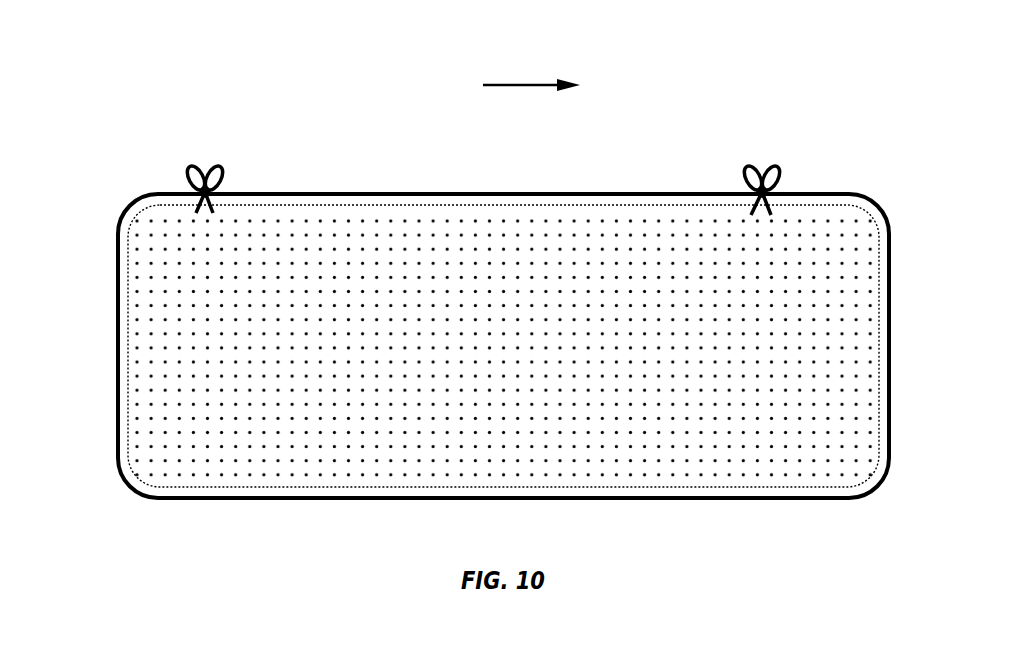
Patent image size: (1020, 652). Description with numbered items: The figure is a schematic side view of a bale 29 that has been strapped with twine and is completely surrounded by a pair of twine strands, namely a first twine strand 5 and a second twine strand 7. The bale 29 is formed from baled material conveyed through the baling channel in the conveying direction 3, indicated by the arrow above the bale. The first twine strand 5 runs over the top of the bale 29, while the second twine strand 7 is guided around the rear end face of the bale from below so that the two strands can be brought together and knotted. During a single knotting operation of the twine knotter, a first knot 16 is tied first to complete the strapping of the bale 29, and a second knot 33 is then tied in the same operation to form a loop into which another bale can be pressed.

The conveying direction 3 is at (520, 85).
The first twine strand 5 is at (333, 196).
The second twine strand 7 is at (118, 272).
The first knot 16 is at (207, 149).
The bale 29 is at (507, 237).
The second knot 33 is at (765, 149).